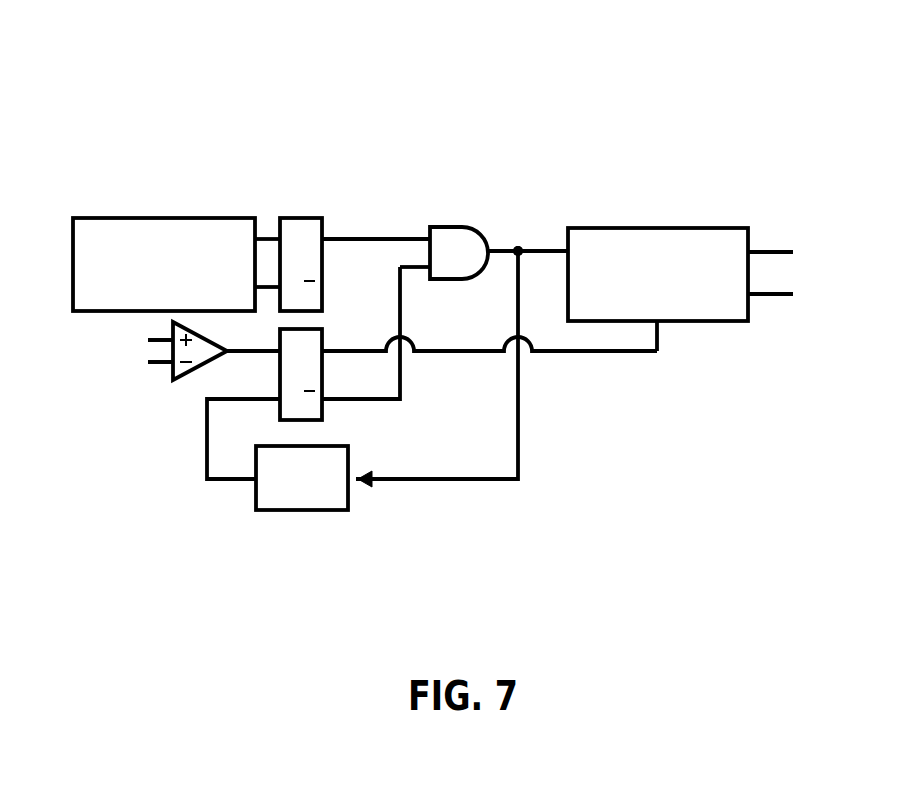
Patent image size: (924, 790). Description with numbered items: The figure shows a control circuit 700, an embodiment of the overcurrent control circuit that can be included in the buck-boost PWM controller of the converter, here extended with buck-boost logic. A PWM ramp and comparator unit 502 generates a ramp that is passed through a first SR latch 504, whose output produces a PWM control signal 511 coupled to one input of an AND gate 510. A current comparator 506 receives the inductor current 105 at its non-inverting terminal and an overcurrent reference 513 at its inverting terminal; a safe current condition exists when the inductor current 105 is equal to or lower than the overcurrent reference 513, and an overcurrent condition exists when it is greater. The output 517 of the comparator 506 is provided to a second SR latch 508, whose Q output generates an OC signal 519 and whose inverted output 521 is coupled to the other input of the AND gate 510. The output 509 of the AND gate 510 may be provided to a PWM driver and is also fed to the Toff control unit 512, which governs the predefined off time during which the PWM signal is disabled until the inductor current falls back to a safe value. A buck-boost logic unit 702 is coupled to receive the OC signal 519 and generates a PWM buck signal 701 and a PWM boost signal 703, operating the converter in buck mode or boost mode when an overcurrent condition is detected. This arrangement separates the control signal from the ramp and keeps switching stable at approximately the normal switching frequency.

The control circuit 700 is at (487, 64).
The PWM ramp and comparator unit 502 is at (165, 212).
The first SR latch 504 is at (303, 212).
The PWM control signal 511 is at (415, 232).
The AND gate 510 is at (463, 282).
The output of the AND gate 509 is at (500, 248).
The buck-boost logic unit 702 is at (657, 223).
The PWM buck signal 701 is at (767, 250).
The PWM boost signal 703 is at (773, 297).
The inductor current 105 is at (132, 333).
The overcurrent reference 513 is at (143, 370).
The current comparator 506 is at (193, 372).
The output of the comparator 517 is at (246, 345).
The second SR latch 508 is at (320, 327).
The OC signal 519 is at (335, 344).
The inverted output Q' 521 is at (378, 402).
The Toff control unit 512 is at (297, 510).